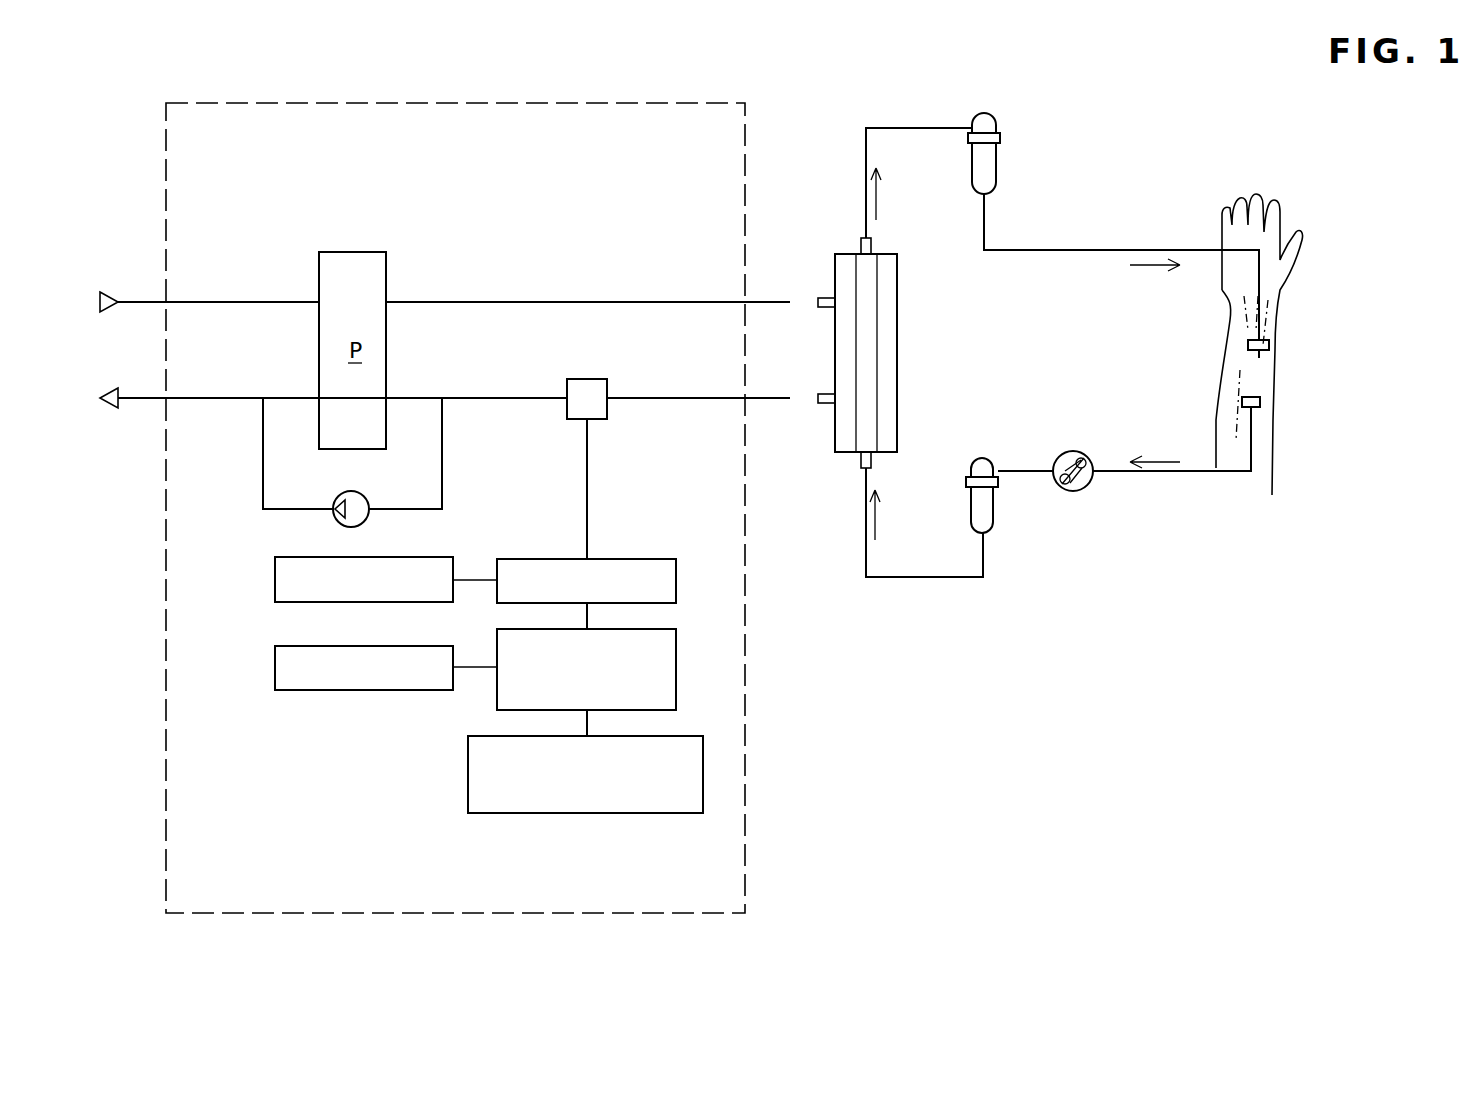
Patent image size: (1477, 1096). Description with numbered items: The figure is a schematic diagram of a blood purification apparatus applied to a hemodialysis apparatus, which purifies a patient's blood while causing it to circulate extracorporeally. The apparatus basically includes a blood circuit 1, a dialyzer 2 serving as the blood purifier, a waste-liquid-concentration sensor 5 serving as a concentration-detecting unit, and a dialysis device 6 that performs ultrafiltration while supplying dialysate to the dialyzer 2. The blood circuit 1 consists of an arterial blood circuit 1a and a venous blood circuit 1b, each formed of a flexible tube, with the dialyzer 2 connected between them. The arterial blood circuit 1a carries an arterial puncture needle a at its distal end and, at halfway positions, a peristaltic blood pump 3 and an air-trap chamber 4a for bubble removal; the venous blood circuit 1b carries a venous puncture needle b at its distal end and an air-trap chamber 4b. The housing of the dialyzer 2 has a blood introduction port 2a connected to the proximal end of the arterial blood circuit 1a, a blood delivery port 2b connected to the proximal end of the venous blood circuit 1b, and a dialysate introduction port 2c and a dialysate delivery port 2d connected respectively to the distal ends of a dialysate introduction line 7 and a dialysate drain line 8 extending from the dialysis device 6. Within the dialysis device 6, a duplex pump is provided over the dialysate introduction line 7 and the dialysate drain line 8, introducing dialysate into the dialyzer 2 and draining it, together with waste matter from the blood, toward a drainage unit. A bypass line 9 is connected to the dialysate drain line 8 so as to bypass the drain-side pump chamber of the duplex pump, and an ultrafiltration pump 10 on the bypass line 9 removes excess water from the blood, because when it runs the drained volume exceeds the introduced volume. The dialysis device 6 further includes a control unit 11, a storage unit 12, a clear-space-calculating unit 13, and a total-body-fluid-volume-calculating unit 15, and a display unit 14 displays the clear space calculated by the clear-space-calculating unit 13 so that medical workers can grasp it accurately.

The blood circuit 1 is at (1117, 137).
The arterial blood circuit 1a is at (1177, 476).
The venous blood circuit 1b is at (1153, 250).
The dialyzer 2 is at (897, 328).
The blood introduction port 2a is at (871, 462).
The blood delivery port 2b is at (871, 242).
The dialysate introduction port 2c is at (825, 308).
The dialysate delivery port 2d is at (825, 394).
The blood pump 3 is at (1073, 451).
The air-trap chamber 4a is at (993, 510).
The air-trap chamber 4b is at (985, 118).
The waste-liquid-concentration sensor 5 is at (596, 379).
The dialysis device 6 is at (752, 130).
The dialysate introduction line 7 is at (570, 300).
The dialysate drain line 8 is at (492, 400).
The bypass line 9 is at (263, 474).
The ultrafiltration pump 10 is at (368, 496).
The control unit 11 is at (275, 577).
The storage unit 12 is at (676, 580).
The clear-space-calculating unit 13 is at (676, 657).
The display unit 14 is at (275, 667).
The total-body-fluid-volume-calculating unit 15 is at (703, 763).
The arterial puncture needle a is at (1260, 390).
The venous puncture needle b is at (1262, 356).